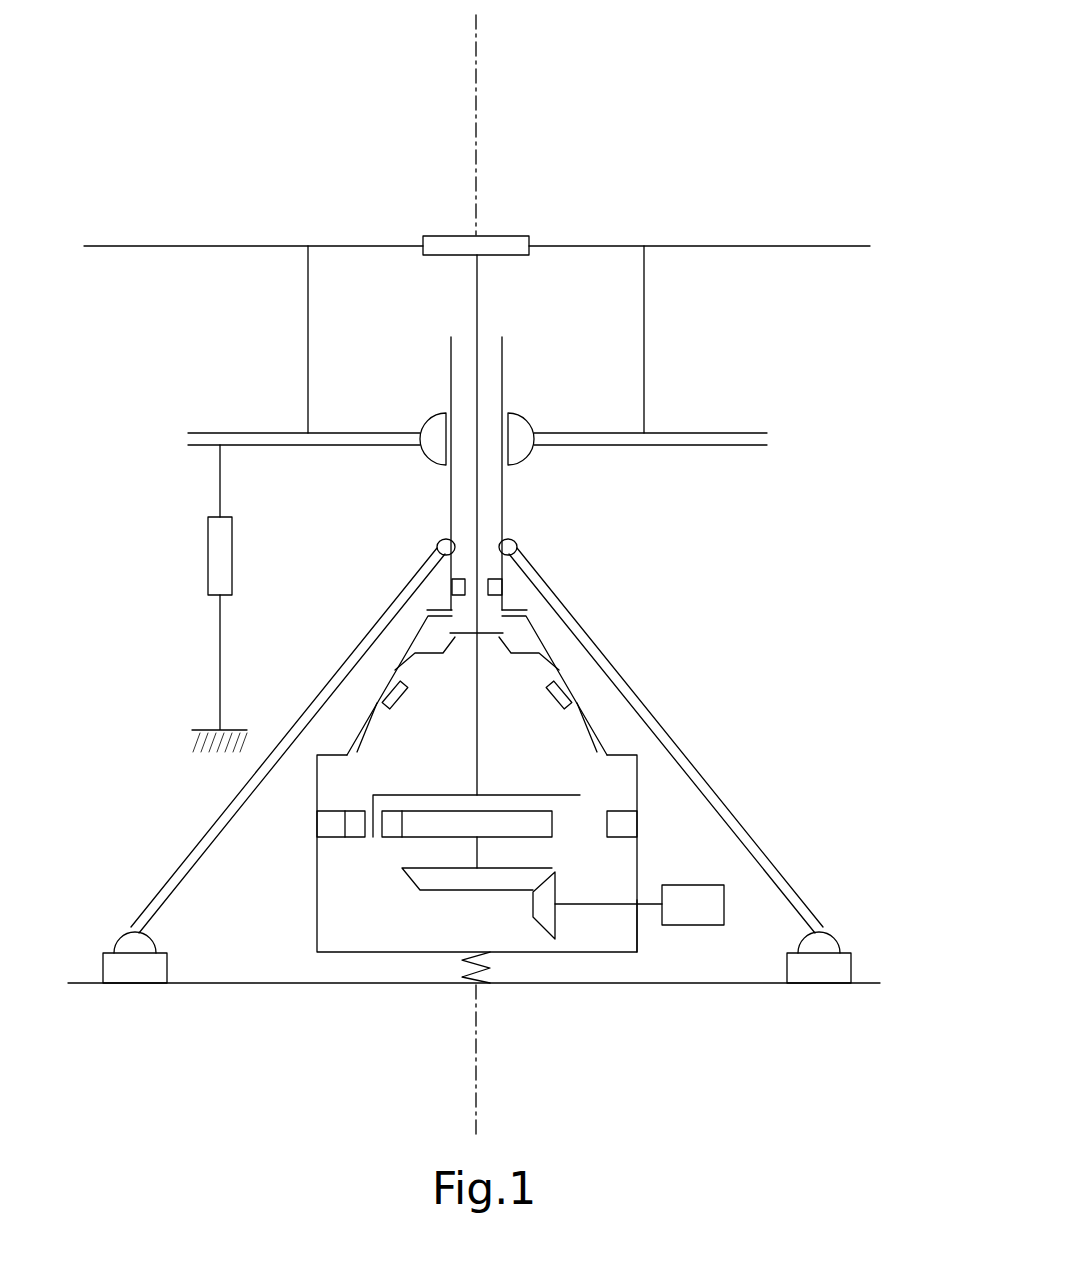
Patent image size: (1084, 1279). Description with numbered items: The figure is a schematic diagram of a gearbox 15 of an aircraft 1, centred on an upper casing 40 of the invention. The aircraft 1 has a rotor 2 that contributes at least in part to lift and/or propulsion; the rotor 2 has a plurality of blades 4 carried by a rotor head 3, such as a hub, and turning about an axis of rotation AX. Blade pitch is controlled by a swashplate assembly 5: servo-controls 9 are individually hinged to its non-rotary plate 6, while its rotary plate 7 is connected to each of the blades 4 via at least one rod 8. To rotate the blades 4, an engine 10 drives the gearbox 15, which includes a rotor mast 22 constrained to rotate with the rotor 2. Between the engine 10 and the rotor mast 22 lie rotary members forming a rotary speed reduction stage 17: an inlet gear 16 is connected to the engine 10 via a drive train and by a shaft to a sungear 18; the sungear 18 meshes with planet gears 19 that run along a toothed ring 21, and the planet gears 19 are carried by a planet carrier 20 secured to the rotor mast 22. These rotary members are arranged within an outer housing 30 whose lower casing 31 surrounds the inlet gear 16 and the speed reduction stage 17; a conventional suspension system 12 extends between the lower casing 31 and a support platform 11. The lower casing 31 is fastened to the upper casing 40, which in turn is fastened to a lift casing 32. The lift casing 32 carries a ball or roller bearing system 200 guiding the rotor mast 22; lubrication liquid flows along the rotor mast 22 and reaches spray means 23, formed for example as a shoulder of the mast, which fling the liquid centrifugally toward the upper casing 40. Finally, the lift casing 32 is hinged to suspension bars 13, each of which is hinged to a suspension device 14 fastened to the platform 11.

The aircraft 1 is at (868, 553).
The rotor 2 is at (584, 151).
The rotor head 3 is at (510, 236).
The blades 4 is at (188, 246).
The swashplate assembly 5 is at (536, 438).
The non-rotary plate 6 is at (745, 445).
The rotary plate 7 is at (730, 433).
The rod 8 is at (308, 315).
The servo-control 9 is at (208, 557).
The engine 10 is at (710, 919).
The support platform 11 is at (690, 983).
The suspension system 12 is at (490, 968).
The suspension bars 13 is at (215, 857).
The suspension device 14 is at (167, 967).
The gearbox 15 is at (670, 780).
The inlet gear 16 is at (580, 887).
The rotary speed reduction stage 17 is at (355, 878).
The sungear 18 is at (523, 840).
The planet gear 19 is at (393, 838).
The planet carrier 20 is at (442, 795).
The toothed ring 21 is at (325, 843).
The rotor mast 22 is at (478, 287).
The spray means 23 is at (488, 636).
The outer housing 30 is at (660, 818).
The lower casing 31 is at (637, 937).
The lift casing 32 is at (503, 495).
The upper casing 40 is at (610, 708).
The ball or roller bearing system 200 is at (497, 578).
The rotor axis AX is at (476, 64).